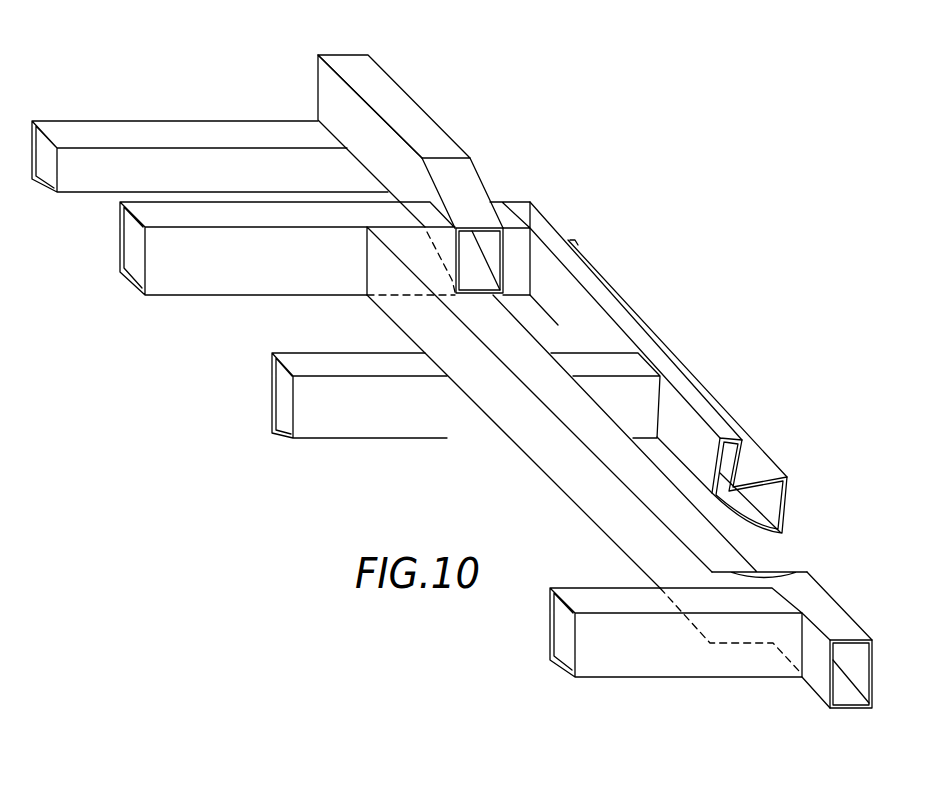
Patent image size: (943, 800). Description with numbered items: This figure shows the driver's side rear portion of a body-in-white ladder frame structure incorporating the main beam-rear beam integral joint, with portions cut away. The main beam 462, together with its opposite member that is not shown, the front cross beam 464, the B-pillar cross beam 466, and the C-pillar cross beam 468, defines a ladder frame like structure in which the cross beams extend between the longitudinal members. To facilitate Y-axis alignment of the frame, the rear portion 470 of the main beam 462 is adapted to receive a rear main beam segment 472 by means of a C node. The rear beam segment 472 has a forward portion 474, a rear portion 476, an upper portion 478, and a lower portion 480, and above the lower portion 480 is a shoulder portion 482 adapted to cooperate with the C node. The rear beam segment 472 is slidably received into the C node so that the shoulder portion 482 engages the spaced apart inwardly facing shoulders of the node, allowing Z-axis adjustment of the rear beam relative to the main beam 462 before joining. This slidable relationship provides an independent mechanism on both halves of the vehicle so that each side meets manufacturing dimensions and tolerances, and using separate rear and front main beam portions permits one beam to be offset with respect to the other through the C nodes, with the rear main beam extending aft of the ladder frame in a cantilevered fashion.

The main beam 462 is at (845, 698).
The front cross beam 464 is at (650, 668).
The B-pillar cross beam 466 is at (412, 436).
The C-pillar cross beam 468 is at (175, 282).
The rear portion of main beam 470 is at (403, 243).
The rear main beam segment 472 is at (435, 140).
The forward portion of rear beam segment 474 is at (487, 248).
The rear portion of rear beam segment 476 is at (333, 53).
The upper portion of rear beam segment 478 is at (392, 98).
The lower portion of rear beam segment 480 is at (356, 160).
The shoulder portion 482 is at (460, 302).